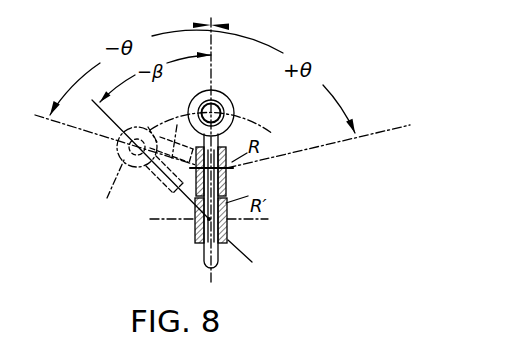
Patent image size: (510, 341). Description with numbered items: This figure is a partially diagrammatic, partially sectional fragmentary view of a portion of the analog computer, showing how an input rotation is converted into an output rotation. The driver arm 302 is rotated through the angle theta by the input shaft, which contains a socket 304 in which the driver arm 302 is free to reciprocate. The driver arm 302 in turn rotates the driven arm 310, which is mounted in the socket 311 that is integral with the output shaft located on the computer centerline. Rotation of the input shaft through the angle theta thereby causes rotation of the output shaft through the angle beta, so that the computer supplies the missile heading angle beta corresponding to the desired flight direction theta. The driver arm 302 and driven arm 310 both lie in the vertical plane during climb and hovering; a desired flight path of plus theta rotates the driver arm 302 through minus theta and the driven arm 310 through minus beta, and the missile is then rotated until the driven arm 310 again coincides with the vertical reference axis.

The driver arm 302 is at (184, 120).
The driven arm 310 is at (232, 104).
The socket 304 is at (230, 173).
The socket 311 is at (228, 231).